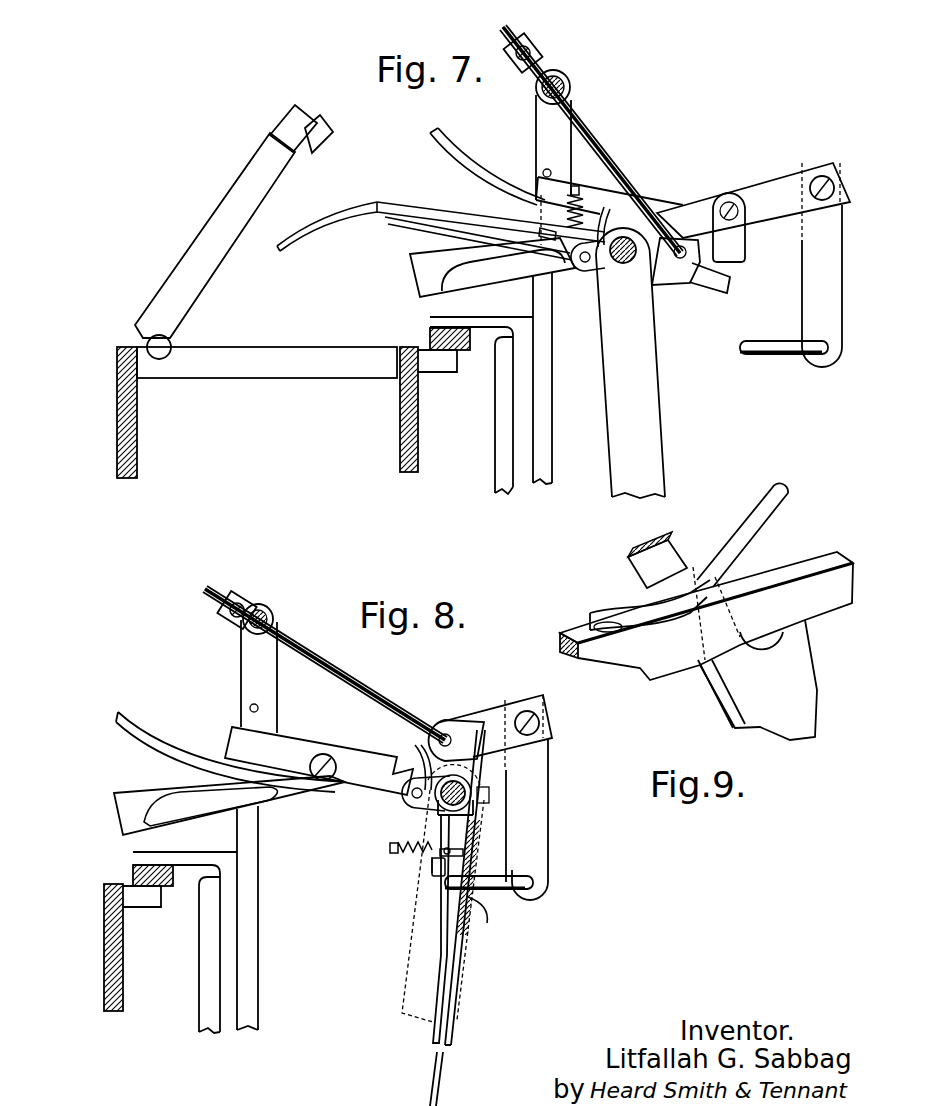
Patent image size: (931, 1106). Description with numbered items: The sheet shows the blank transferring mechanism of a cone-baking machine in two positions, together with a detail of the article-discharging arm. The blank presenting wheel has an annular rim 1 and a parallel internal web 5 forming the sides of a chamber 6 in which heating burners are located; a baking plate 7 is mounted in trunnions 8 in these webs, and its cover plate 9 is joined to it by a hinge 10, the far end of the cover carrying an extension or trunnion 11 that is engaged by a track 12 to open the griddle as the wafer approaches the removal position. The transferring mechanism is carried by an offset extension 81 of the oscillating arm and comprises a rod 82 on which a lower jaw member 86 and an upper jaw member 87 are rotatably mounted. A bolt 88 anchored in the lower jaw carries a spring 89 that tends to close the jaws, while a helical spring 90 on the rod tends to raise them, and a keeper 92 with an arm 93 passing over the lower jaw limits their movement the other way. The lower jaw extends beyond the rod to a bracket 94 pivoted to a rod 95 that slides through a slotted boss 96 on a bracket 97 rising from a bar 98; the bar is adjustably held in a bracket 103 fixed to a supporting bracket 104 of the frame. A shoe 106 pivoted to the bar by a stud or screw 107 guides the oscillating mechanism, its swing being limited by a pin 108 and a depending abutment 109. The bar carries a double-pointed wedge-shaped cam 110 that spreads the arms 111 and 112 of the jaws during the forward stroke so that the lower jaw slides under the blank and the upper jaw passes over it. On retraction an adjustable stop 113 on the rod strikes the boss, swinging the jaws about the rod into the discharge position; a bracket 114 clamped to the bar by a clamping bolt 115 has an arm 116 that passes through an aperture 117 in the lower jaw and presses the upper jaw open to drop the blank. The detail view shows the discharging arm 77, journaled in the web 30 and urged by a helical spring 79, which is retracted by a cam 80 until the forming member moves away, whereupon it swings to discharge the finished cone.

In FIG. 7, the annular rim 1 is at (418, 433).
In FIG. 8, the annular rim 1 is at (123, 953).
In FIG. 7, the internal web 5 is at (137, 438).
In FIG. 7, the chamber 6 is at (263, 450).
In FIG. 7, the plate 7 is at (259, 368).
In FIG. 7, the trunnions 8 is at (440, 366).
In FIG. 8, the trunnions 8 is at (142, 904).
In FIG. 7, the cover plate 9 is at (210, 228).
In FIG. 7, the hinge 10 is at (172, 345).
In FIG. 7, the extension or trunnion 11 is at (290, 120).
In FIG. 7, the track 12 is at (327, 128).
In FIG. 9, the web 30 is at (828, 560).
In FIG. 9, the arm 77 is at (767, 511).
In FIG. 9, the helical spring 79 is at (590, 624).
In FIG. 9, the cam 80 is at (693, 572).
In FIG. 7, the offset extension 81 is at (651, 443).
In FIG. 7, the shaft or rod 82 is at (598, 283).
In FIG. 8, the shaft or rod 82 is at (471, 803).
In FIG. 7, the lower jaw member 86 is at (430, 228).
In FIG. 8, the lower jaw member 86 is at (458, 967).
In FIG. 7, the upper jaw member 87 is at (463, 220).
In FIG. 8, the upper jaw member 87 is at (440, 917).
In FIG. 7, the bolt 88 is at (584, 266).
In FIG. 8, the bolt 88 is at (448, 848).
In FIG. 7, the spring 89 is at (560, 212).
In FIG. 8, the spring 89 is at (418, 852).
In FIG. 7, the helical spring 90 is at (627, 265).
In FIG. 8, the helical spring 90 is at (440, 800).
In FIG. 7, the keeper 92 is at (640, 199).
In FIG. 8, the keeper 92 is at (415, 748).
In FIG. 7, the arm 93 is at (580, 287).
In FIG. 8, the arm 93 is at (410, 795).
In FIG. 7, the bracket 94 is at (692, 290).
In FIG. 8, the bracket 94 is at (464, 730).
In FIG. 7, the rod 95 is at (627, 173).
In FIG. 8, the rod 95 is at (397, 705).
In FIG. 7, the slotted boss 96 is at (572, 88).
In FIG. 8, the slotted boss 96 is at (246, 631).
In FIG. 7, the bracket 97 is at (540, 130).
In FIG. 8, the bracket 97 is at (241, 672).
In FIG. 7, the bar 98 is at (723, 190).
In FIG. 8, the bar 98 is at (457, 715).
In FIG. 7, the bracket 103 is at (542, 360).
In FIG. 8, the bracket 103 is at (262, 958).
In FIG. 7, the supporting bracket 104 is at (495, 460).
In FIG. 8, the supporting bracket 104 is at (199, 998).
In FIG. 7, the shoe 106 is at (597, 207).
In FIG. 8, the shoe 106 is at (290, 735).
In FIG. 8, the stud or screw 107 is at (330, 757).
In FIG. 7, the pin 108 is at (544, 171).
In FIG. 8, the pin 108 is at (250, 707).
In FIG. 7, the depending abutment 109 is at (750, 240).
In FIG. 7, the wedge-shaped cam 110 is at (494, 275).
In FIG. 8, the wedge-shaped cam 110 is at (215, 810).
In FIG. 7, the arm 111 is at (512, 268).
In FIG. 8, the arm 111 is at (465, 858).
In FIG. 7, the arm 112 is at (478, 238).
In FIG. 8, the arm 112 is at (432, 873).
In FIG. 7, the adjustable stop 113 is at (540, 47).
In FIG. 8, the adjustable stop 113 is at (247, 598).
In FIG. 7, the bracket 114 is at (808, 295).
In FIG. 8, the bracket 114 is at (533, 772).
In FIG. 7, the clamping bolt 115 is at (826, 178).
In FIG. 8, the clamping bolt 115 is at (543, 720).
In FIG. 7, the arm 116 is at (780, 356).
In FIG. 8, the arm 116 is at (500, 893).
In FIG. 8, the aperture 117 is at (488, 922).